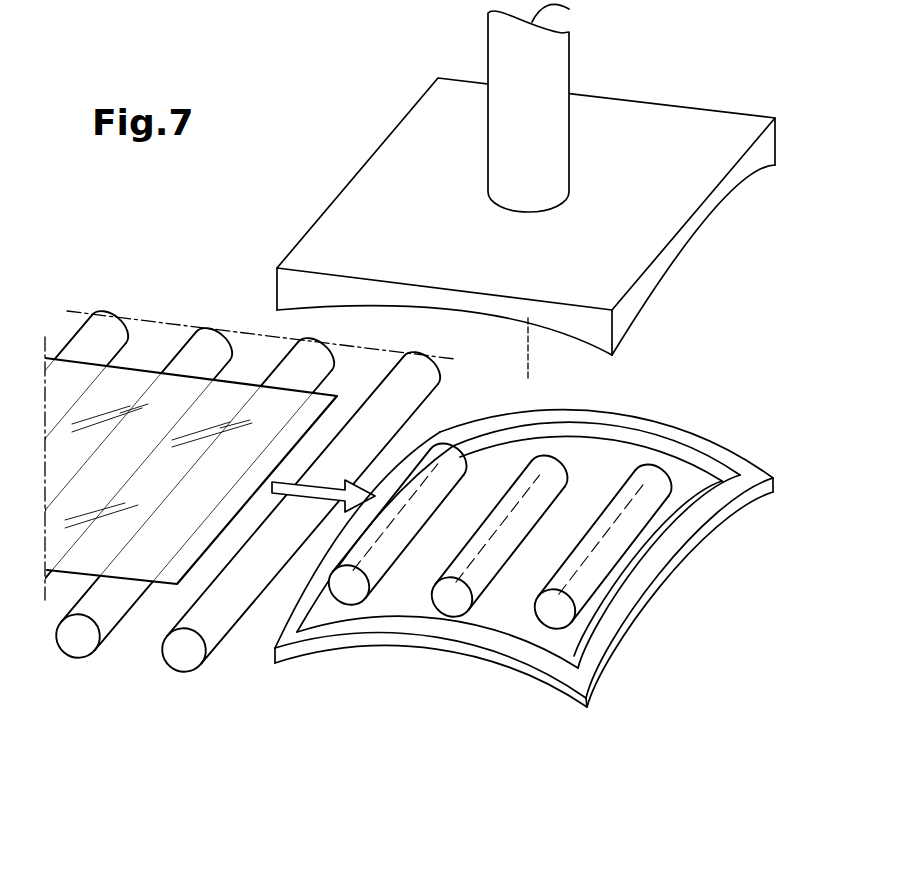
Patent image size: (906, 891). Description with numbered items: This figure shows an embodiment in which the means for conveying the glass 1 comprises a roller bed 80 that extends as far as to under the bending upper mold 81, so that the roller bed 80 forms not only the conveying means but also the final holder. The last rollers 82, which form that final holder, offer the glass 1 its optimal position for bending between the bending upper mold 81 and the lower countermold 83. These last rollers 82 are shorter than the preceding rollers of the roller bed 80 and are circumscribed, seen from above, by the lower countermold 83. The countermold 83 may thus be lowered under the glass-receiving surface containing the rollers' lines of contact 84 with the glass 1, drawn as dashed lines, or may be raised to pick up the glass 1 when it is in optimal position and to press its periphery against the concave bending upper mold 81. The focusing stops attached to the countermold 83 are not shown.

The glass 1 is at (138, 366).
The roller bed 80 is at (160, 659).
The bending upper mold 81 is at (658, 305).
The last rollers 82 is at (553, 613).
The lower countermold 83 is at (322, 648).
The rollers' lines of contact 84 is at (637, 475).